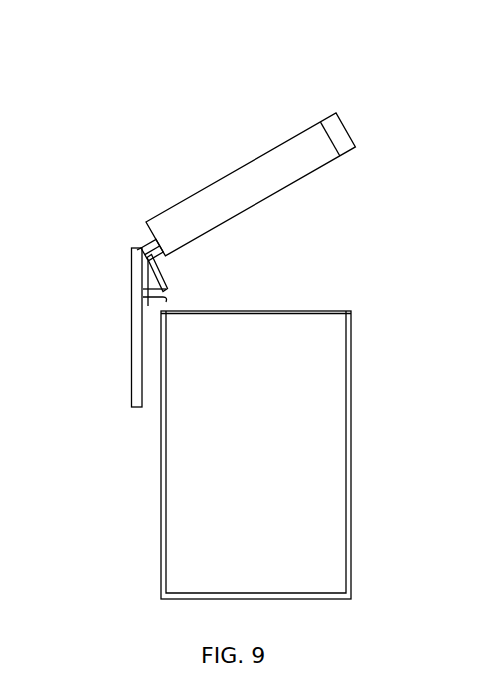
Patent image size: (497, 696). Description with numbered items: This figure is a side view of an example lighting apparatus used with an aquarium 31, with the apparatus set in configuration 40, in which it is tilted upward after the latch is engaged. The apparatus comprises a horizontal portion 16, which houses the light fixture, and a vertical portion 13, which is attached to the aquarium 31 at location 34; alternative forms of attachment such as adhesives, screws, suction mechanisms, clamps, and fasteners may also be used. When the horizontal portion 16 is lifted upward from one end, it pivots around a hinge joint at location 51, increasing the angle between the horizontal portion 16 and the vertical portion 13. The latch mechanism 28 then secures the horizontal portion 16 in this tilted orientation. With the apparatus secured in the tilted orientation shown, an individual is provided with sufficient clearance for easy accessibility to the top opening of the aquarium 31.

The configuration 40 is at (266, 74).
The horizontal portion 16 is at (340, 138).
The location of hinge joint 51 is at (118, 244).
The latch mechanism 28 is at (168, 282).
The vertical portion 13 is at (132, 340).
The location 34 is at (154, 359).
The aquarium 31 is at (325, 401).